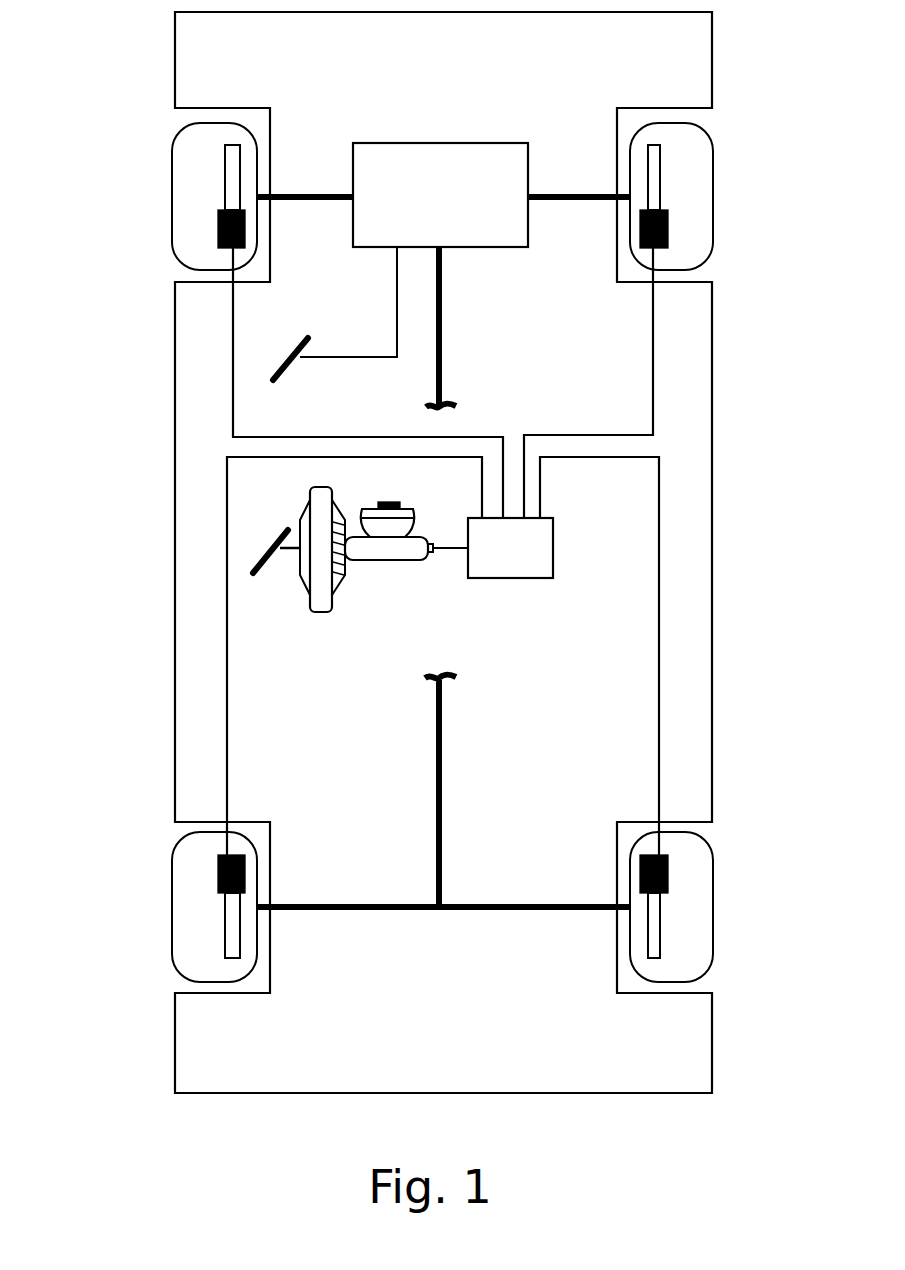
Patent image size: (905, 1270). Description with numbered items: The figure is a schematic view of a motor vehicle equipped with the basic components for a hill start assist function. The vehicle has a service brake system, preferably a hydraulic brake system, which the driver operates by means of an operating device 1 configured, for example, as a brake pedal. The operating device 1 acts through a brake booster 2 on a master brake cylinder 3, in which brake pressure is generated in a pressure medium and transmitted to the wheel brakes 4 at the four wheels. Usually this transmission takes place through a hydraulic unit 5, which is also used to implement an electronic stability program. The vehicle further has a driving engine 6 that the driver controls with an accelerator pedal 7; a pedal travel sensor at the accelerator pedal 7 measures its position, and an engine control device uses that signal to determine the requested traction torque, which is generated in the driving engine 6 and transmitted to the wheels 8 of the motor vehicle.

The operating device 1 is at (285, 540).
The brake booster 2 is at (320, 588).
The master brake cylinder 3 is at (385, 550).
The wheel brakes 4 is at (218, 212).
The hydraulic unit 5 is at (538, 535).
The driving engine 6 is at (414, 275).
The accelerator pedal 7 is at (302, 354).
The wheels 8 is at (196, 163).